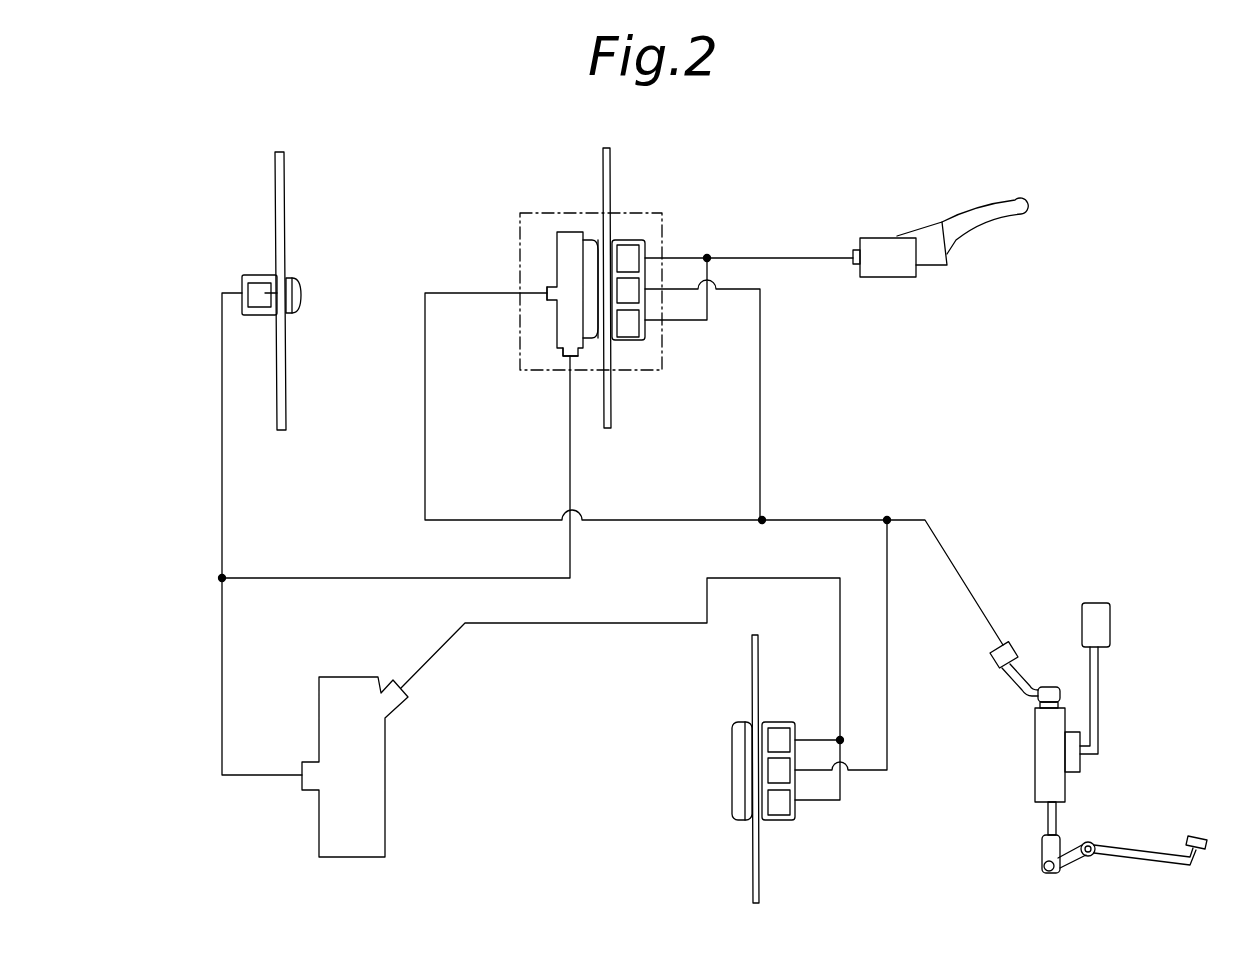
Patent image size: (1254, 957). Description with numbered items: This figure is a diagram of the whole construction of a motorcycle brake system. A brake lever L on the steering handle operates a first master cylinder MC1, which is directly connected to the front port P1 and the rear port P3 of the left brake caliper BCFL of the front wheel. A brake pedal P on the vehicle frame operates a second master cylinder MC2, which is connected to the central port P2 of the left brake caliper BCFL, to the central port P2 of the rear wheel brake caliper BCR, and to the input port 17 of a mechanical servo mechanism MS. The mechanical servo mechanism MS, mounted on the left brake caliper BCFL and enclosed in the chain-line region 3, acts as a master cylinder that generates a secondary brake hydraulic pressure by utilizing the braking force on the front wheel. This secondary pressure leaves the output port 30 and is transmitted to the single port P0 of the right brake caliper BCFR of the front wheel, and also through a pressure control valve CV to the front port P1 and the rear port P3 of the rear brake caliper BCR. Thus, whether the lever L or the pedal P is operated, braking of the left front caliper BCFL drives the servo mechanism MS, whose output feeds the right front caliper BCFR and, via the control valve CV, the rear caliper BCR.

The mechanical servo mechanism area 3 is at (514, 221).
The right brake caliper BCFR is at (257, 268).
The port P0 is at (298, 287).
The mechanical servo mechanism MS is at (556, 229).
The input port 17 is at (547, 296).
The output port 30 is at (570, 358).
The left brake caliper BCFL is at (639, 236).
The front port P1 is at (647, 245).
The central port P2 is at (645, 297).
The rear port P3 is at (645, 330).
The first master cylinder MC1 is at (889, 283).
The brake lever L is at (990, 216).
The pressure control valve CV is at (391, 752).
The brake caliper BCR is at (777, 715).
The second master cylinder MC2 is at (1071, 787).
The brake pedal P is at (1201, 838).